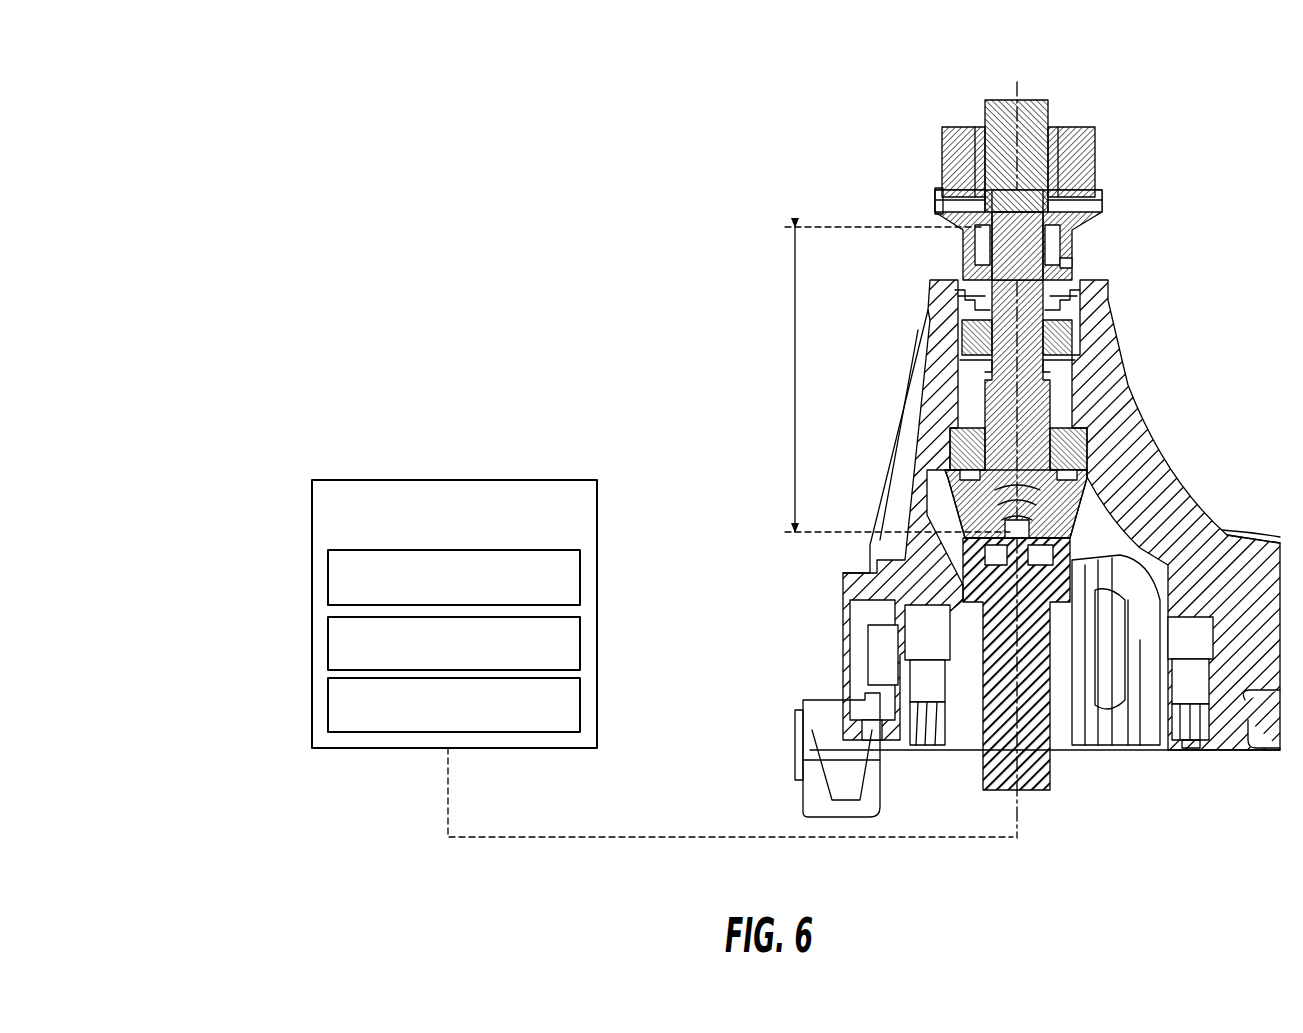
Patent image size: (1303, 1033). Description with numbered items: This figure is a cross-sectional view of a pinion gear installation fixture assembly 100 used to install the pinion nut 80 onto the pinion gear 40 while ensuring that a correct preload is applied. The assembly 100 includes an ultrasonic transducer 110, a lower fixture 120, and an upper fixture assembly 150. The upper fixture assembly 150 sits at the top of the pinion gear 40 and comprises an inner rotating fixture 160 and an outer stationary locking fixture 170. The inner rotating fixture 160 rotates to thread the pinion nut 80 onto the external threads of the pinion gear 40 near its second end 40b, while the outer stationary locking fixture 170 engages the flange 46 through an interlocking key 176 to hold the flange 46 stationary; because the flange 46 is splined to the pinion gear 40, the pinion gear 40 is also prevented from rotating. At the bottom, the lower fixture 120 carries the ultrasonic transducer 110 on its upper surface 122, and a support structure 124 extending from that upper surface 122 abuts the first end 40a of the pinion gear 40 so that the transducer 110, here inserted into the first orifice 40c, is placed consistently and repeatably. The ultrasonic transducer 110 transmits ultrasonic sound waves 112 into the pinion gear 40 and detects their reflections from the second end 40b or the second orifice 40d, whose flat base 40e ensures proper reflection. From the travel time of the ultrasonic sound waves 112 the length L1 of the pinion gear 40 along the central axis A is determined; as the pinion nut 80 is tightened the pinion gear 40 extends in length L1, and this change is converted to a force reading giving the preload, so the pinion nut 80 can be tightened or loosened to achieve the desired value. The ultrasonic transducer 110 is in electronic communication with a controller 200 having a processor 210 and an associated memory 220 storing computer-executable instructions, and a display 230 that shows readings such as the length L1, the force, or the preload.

The pinion gear installation fixture assembly 100 is at (858, 103).
The upper fixture assembly 150 is at (1135, 102).
The inner rotating fixture 160 is at (1000, 118).
The outer stationary locking fixture 170 is at (1088, 165).
The key 176 is at (936, 195).
The second orifice 40d is at (936, 211).
The second end 40b is at (1100, 211).
The flat base 40e is at (972, 252).
The flange 46 is at (1035, 235).
The pinion nut 80 is at (1074, 262).
The pinion gear 40 is at (1101, 375).
The ultrasonic sound waves 112 is at (1090, 450).
The first orifice 40c is at (1060, 495).
The ultrasonic transducer 110 is at (873, 543).
The upper surface 122 is at (1005, 478).
The support structure 124 is at (1020, 533).
The lower fixture 120 is at (1048, 768).
The first end 40a is at (1040, 560).
The controller 200 is at (426, 614).
The processor 210 is at (348, 583).
The memory 220 is at (348, 650).
The display 230 is at (348, 712).
The length L1 is at (795, 370).
The central axis A is at (1018, 808).